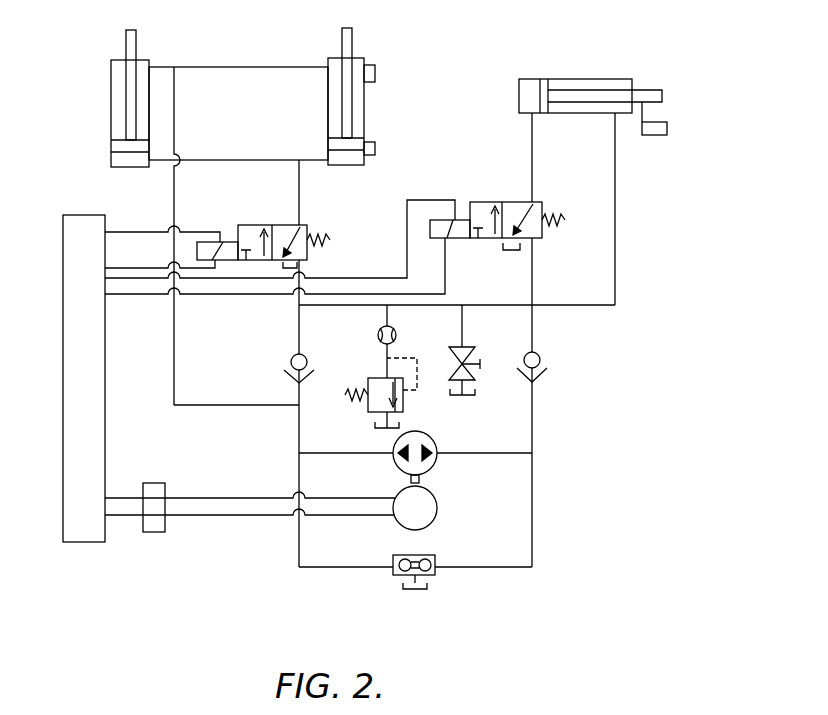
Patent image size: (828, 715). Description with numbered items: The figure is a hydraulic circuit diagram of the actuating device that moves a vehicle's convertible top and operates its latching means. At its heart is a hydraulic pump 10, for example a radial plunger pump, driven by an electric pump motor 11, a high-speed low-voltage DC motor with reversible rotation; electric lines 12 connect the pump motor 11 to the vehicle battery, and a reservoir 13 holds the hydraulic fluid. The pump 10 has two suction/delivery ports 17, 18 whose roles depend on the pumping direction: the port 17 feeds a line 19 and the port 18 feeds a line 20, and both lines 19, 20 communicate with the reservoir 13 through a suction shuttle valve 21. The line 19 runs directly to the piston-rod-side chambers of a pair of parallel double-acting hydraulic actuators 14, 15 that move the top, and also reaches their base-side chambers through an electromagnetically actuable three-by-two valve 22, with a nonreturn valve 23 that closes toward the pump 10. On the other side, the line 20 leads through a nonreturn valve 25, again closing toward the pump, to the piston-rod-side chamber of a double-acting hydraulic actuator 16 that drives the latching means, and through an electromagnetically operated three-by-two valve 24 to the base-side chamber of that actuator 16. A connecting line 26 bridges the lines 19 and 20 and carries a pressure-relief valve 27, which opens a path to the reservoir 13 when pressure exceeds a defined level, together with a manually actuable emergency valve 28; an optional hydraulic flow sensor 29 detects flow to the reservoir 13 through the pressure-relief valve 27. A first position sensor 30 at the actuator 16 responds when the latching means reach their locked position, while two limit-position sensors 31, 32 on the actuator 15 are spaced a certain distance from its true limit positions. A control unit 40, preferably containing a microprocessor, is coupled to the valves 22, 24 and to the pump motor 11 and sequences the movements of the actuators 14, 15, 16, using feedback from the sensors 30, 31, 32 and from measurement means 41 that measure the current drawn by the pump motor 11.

The hydraulic pump 10 is at (432, 468).
The electric pump motor 11 is at (432, 522).
The electric lines 12 is at (217, 500).
The reservoir 13 is at (427, 590).
The double-acting hydraulic actuator 14 is at (111, 103).
The double-acting hydraulic actuator 15 is at (364, 103).
The double-acting hydraulic actuator 16 is at (583, 79).
The suction/delivery port 17 is at (398, 463).
The suction/delivery port 18 is at (437, 446).
The line 19 is at (298, 430).
The line 20 is at (615, 212).
The suction shuttle valve 21 is at (393, 555).
The electromagnetically actuable 3/2 valve 22 is at (261, 224).
The nonreturn valve 23 is at (290, 355).
The electromagnetically operated 3/2 valve 24 is at (488, 202).
The nonreturn valve 25 is at (540, 352).
The connecting line 26 is at (483, 305).
The pressure-relief valve 27 is at (368, 402).
The emergency valve 28 is at (470, 363).
The hydraulic flow sensor 29 is at (378, 332).
The first position sensor 30 is at (667, 129).
The limit-position sensor 31 is at (375, 74).
The limit-position sensor 32 is at (375, 150).
The control unit 40 is at (105, 386).
The measurement means 41 is at (155, 483).